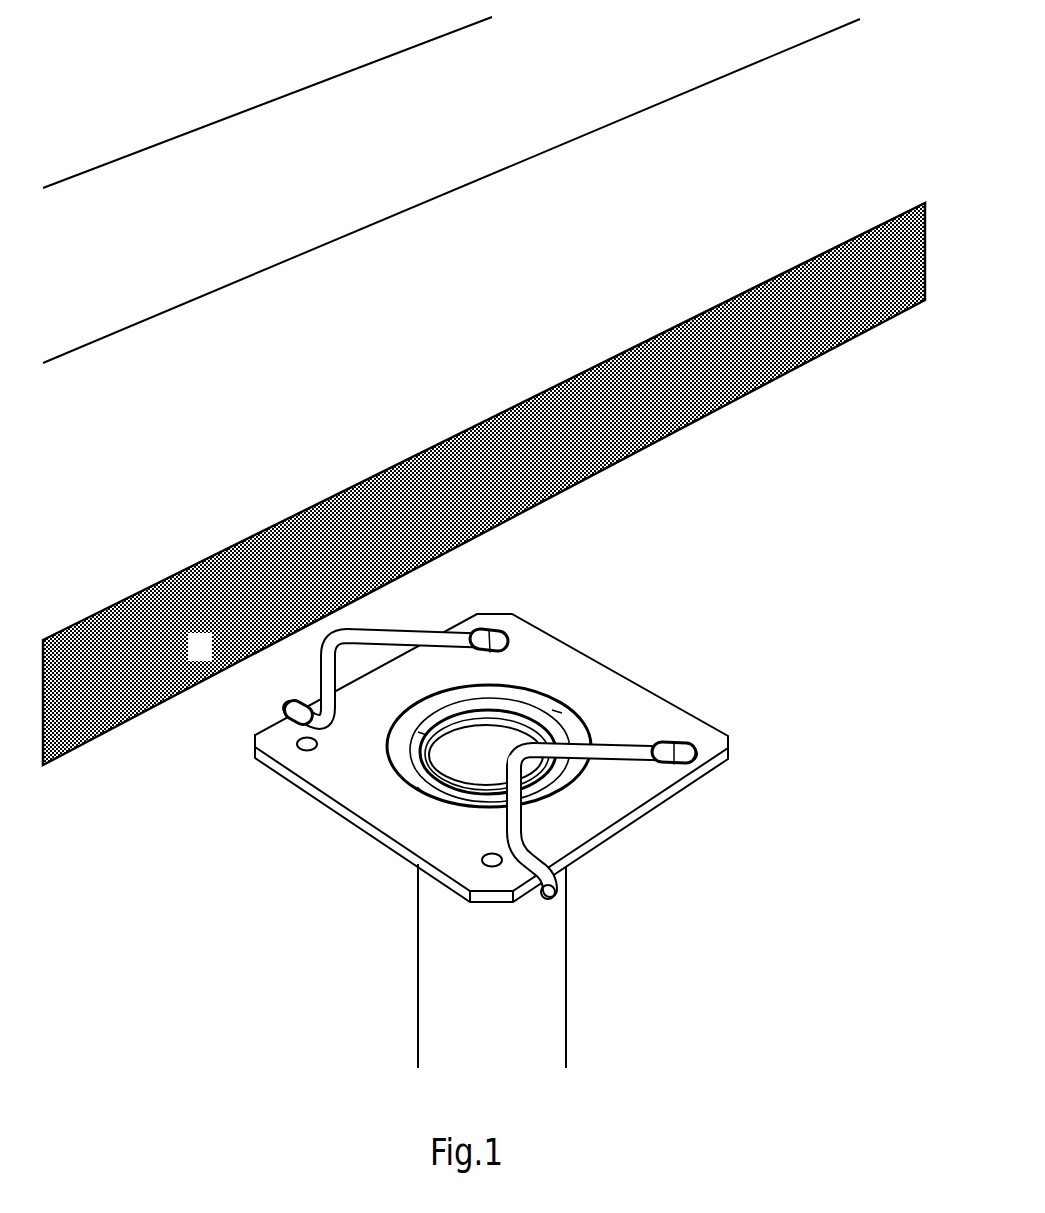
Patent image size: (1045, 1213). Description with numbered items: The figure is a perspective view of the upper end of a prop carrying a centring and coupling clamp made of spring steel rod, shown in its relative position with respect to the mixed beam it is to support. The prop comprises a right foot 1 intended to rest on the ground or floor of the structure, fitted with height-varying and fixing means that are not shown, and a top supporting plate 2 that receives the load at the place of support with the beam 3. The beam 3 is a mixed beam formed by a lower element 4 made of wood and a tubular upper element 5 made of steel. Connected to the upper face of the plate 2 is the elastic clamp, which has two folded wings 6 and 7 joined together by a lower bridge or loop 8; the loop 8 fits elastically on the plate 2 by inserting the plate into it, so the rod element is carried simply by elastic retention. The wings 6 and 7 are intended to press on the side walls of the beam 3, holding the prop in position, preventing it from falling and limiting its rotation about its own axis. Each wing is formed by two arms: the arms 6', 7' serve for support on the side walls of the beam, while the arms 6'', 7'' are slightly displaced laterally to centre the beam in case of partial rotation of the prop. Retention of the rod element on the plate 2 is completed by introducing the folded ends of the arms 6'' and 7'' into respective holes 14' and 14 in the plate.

The right foot 1 is at (609, 1005).
The top supporting plate 2 is at (637, 803).
The beam 3 is at (484, 391).
The lower element 4 is at (815, 346).
The tubular upper element 5 is at (177, 152).
The wing 6 is at (380, 678).
The arm 6' is at (247, 742).
The arm 6'' is at (414, 618).
The wing 7 is at (566, 739).
The arm 7' is at (456, 841).
The arm 7'' is at (612, 706).
The loop 8 is at (588, 883).
The hole 14 is at (718, 714).
The hole 14' is at (537, 604).